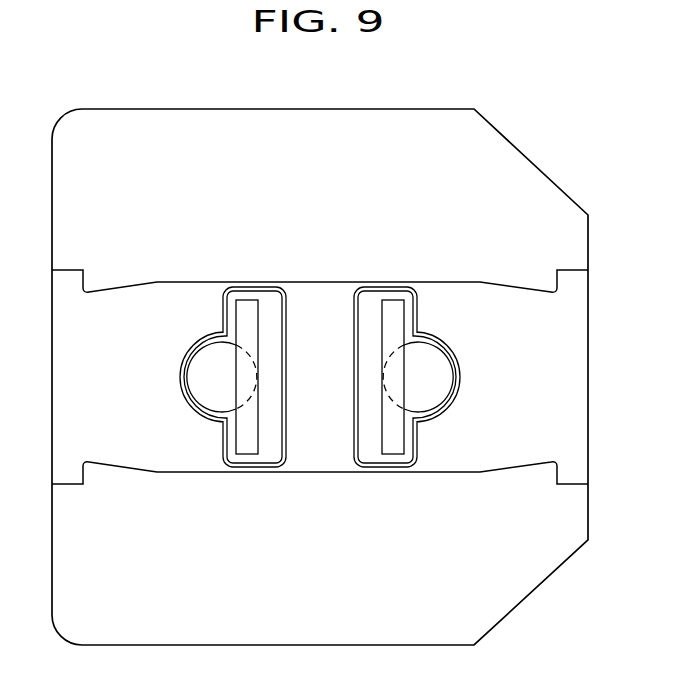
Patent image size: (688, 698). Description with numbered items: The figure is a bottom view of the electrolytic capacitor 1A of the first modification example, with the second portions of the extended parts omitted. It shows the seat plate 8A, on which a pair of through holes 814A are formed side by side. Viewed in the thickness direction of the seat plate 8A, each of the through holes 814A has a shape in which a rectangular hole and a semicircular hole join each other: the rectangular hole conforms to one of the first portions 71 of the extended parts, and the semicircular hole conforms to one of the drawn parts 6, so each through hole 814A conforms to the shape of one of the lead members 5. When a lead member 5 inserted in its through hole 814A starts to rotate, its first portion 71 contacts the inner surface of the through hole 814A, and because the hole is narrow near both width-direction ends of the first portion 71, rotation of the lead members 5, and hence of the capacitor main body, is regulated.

The electrolytic capacitor 1A is at (537, 126).
The seat plate 8A is at (396, 108).
The through holes 814A is at (232, 433).
The lead members 5 is at (203, 339).
The drawn parts 6 is at (200, 367).
The first portions 71 is at (245, 307).